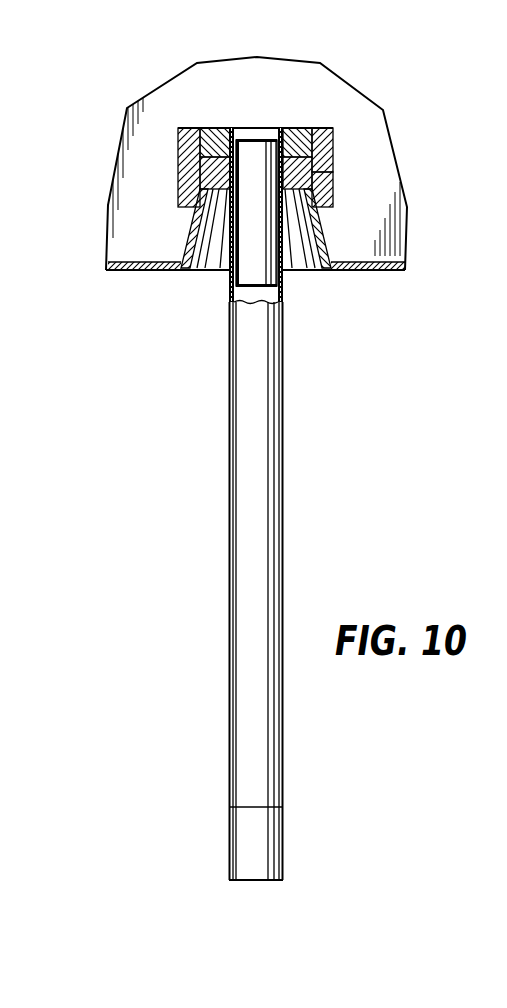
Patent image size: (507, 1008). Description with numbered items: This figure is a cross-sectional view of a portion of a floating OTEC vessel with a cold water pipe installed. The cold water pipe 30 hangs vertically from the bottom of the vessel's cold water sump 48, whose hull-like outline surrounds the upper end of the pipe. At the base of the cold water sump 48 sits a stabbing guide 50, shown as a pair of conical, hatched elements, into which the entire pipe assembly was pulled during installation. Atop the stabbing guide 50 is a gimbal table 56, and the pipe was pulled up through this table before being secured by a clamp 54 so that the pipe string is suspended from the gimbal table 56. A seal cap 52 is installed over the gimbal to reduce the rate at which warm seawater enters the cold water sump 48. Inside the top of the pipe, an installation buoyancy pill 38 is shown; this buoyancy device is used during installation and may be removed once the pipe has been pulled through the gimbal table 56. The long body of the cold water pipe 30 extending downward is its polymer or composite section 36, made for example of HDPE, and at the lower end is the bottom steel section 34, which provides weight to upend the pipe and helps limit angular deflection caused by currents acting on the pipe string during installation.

The cold water pipe 30 is at (266, 483).
The bottom steel section 34 is at (280, 842).
The polymer or composite section 36 is at (237, 572).
The installation buoyancy pill 38 is at (255, 142).
The cold water sump 48 is at (133, 240).
The stabbing guide 50 is at (328, 240).
The seal cap 52 is at (333, 147).
The clamp 54 is at (215, 135).
The gimbal table 56 is at (333, 172).